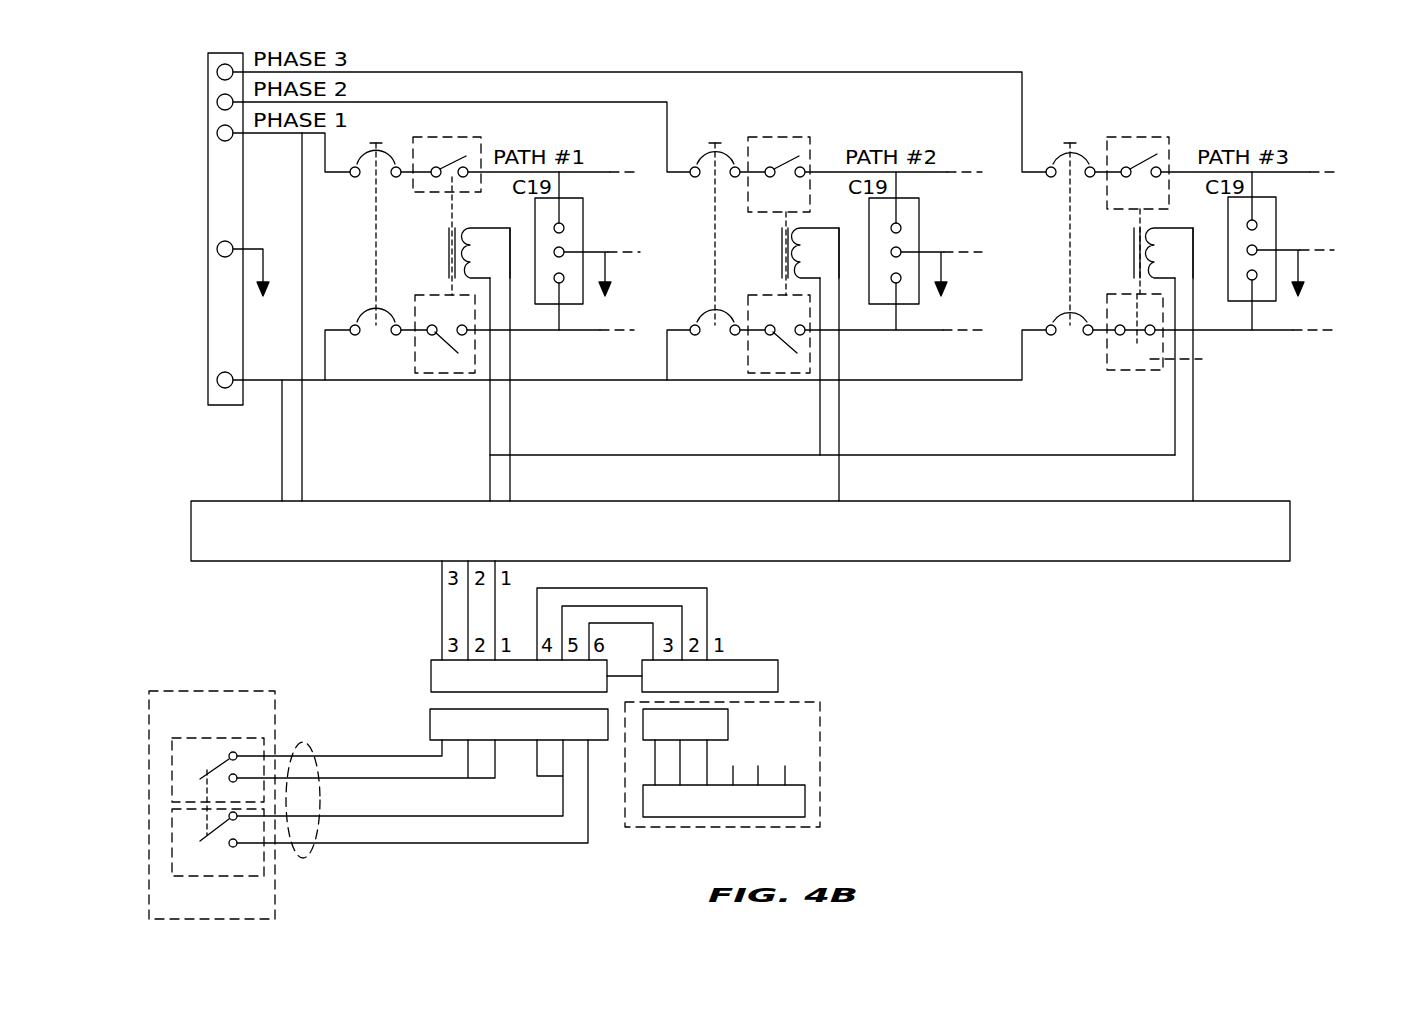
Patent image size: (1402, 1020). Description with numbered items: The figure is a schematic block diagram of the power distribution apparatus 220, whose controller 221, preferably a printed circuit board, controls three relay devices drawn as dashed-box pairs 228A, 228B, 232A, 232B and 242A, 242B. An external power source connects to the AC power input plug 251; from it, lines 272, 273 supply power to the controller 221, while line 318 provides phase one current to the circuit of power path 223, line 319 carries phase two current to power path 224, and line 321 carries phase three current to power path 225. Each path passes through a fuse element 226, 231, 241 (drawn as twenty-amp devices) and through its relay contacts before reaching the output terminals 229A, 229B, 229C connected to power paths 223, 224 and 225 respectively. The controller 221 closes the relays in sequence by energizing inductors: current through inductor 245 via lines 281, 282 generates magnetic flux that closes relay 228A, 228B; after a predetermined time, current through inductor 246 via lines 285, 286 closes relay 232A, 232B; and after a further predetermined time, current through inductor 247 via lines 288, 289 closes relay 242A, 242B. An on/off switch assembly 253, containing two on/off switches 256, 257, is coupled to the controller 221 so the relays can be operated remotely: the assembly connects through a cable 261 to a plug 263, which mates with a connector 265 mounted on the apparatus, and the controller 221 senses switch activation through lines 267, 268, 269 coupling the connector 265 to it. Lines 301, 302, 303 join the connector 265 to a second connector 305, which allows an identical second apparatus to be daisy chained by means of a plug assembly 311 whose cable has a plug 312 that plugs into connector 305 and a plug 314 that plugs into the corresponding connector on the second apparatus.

The power distribution apparatus 220 is at (1272, 122).
The controller 221 is at (1292, 507).
The power path 223 is at (590, 332).
The power path 224 is at (921, 332).
The power path 225 is at (1290, 332).
The 20 amp fuses / breaker path 1 226 is at (386, 157).
The relay device 228A is at (438, 130).
The relay device 228B is at (443, 373).
The output terminal 229A is at (585, 217).
The output terminal 229B is at (921, 217).
The output terminal 229C is at (1278, 208).
The 20 amp fuses / breaker path 2 231 is at (697, 155).
The relay device 232A is at (776, 128).
The relay device 232B is at (786, 373).
The 20 amp fuses / breaker path 3 241 is at (1057, 152).
The relay device 242A is at (1125, 130).
The relay device 242B is at (1122, 370).
The inductor 245 is at (472, 230).
The inductor 246 is at (812, 230).
The inductor 247 is at (1166, 230).
The AC power input plug 251 is at (211, 408).
The on/off switch assembly 253 is at (165, 690).
The on/off switch 256 is at (190, 738).
The on/off switch 257 is at (183, 878).
The cable 261 is at (309, 732).
The plug 263 is at (430, 722).
The connector 265 is at (430, 664).
The line 267 is at (440, 581).
The line 268 is at (466, 616).
The line 269 is at (497, 592).
The line 272 is at (280, 459).
The line 273 is at (304, 459).
The line 281 is at (488, 442).
The line 282 is at (512, 413).
The line 285 is at (818, 437).
The line 286 is at (841, 413).
The line 288 is at (1178, 406).
The line 289 is at (1196, 446).
The line 301 is at (686, 589).
The line 302 is at (690, 607).
The line 303 is at (656, 629).
The second connector 305 is at (780, 668).
The plug assembly 311 is at (822, 722).
The plug 312 is at (730, 712).
The plug 314 is at (808, 803).
The line 318 is at (328, 140).
The line 319 is at (436, 102).
The line 321 is at (442, 71).